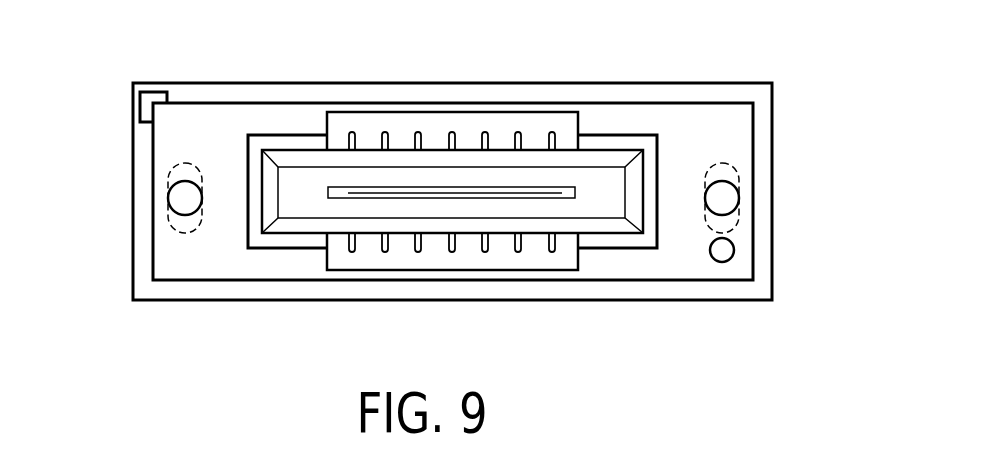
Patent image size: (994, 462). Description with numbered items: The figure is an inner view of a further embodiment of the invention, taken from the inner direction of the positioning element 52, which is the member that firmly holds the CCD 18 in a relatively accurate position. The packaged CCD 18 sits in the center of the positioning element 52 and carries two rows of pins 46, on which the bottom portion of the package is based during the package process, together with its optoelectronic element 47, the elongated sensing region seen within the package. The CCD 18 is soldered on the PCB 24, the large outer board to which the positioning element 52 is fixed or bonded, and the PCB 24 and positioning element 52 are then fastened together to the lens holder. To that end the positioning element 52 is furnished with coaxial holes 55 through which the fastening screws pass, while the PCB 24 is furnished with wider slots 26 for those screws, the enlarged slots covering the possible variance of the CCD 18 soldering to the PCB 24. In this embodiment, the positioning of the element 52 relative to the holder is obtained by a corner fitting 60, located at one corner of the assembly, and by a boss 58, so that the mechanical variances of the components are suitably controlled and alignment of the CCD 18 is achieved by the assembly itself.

The CCD 18 is at (433, 147).
The PCB 24 is at (680, 92).
The wider slots 26 is at (728, 165).
The pins 46 is at (520, 133).
The optoelectronic element 47 is at (360, 188).
The positioning element 52 is at (608, 272).
The coaxial holes 55 is at (722, 198).
The boss 58 is at (722, 250).
The corner fitting 60 is at (152, 97).